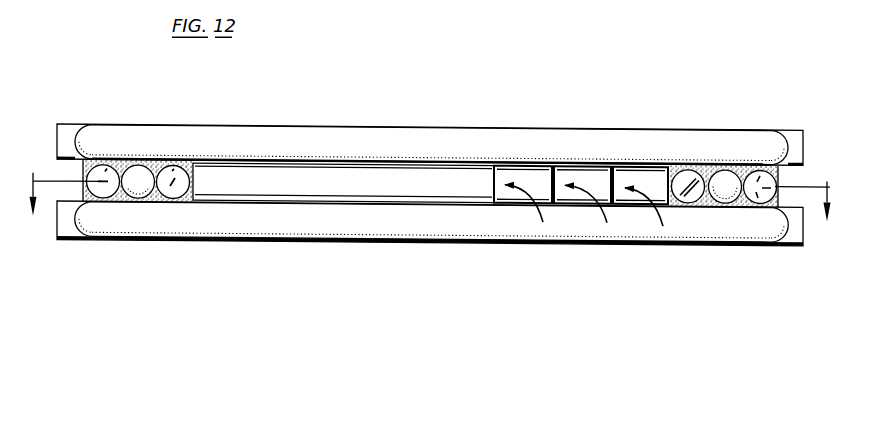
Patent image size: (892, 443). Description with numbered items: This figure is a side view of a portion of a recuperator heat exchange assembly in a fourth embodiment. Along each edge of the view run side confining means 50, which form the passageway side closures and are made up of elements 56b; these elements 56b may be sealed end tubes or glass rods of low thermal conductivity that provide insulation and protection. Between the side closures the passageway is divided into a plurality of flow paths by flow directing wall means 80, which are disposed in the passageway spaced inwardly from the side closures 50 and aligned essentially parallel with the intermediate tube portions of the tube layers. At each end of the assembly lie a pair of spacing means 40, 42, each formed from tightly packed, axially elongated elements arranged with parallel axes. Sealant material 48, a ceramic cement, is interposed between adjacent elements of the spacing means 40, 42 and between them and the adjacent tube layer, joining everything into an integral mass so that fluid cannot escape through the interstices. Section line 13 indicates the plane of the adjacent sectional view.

The section line 13- 13 is at (428, 211).
The spacing means 40 is at (97, 173).
The spacing means 42 is at (770, 172).
The sealant material 48 is at (123, 198).
The side confining means 50 is at (342, 175).
The sealed end tubes 56b is at (117, 142).
The flow directing wall means 80 is at (570, 173).